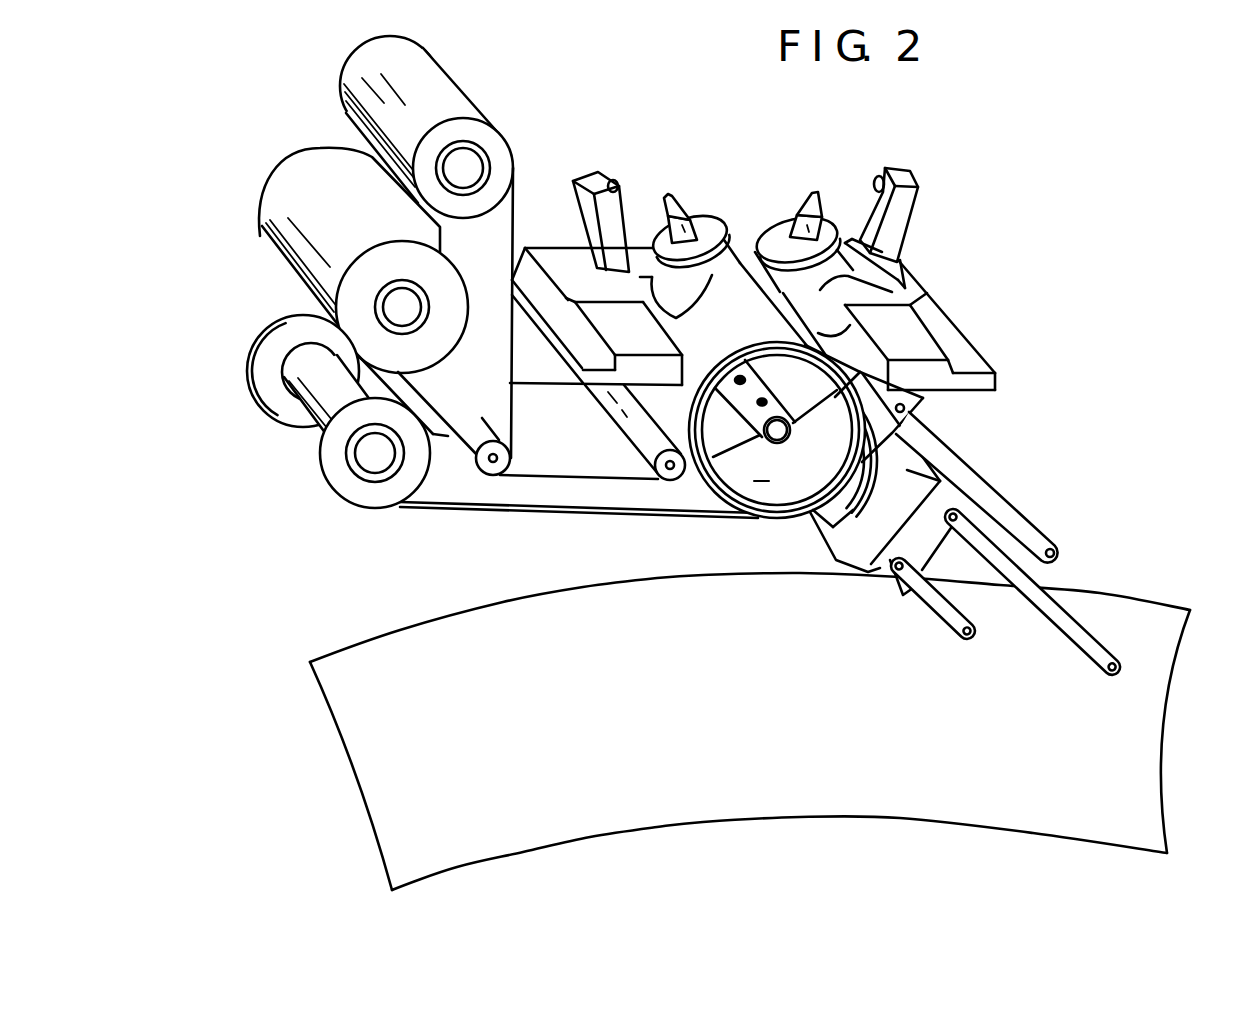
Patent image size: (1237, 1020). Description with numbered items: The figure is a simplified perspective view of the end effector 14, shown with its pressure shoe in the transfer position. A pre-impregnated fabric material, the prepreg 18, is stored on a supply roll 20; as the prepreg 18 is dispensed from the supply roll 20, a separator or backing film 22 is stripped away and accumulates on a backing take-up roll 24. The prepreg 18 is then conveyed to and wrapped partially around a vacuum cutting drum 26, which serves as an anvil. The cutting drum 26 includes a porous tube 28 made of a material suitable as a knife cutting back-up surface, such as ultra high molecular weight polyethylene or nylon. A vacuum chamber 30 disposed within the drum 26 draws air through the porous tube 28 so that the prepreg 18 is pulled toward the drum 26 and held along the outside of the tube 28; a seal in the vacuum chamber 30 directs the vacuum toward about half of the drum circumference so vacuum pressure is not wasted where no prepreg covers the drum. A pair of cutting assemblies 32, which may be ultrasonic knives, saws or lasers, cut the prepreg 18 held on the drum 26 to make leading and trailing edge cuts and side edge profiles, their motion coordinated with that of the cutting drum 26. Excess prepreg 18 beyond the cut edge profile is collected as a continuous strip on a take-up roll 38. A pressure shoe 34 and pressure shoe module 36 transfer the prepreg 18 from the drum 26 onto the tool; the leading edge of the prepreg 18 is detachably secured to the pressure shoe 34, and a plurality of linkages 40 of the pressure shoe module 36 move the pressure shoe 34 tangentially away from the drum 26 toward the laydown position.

The end effector 14 is at (1194, 147).
The prepreg 18 is at (459, 401).
The supply roll 20 is at (282, 162).
The backing film 22 is at (513, 205).
The backing take-up roll 24 is at (500, 137).
The vacuum cutting drum 26 is at (774, 455).
The porous tube 28 is at (835, 392).
The vacuum chamber 30 is at (734, 441).
The cutting assemblies 32 is at (789, 180).
The pressure shoe 34 is at (855, 493).
The pressure shoe module 36 is at (1020, 475).
The take-up roll 38 is at (367, 518).
The linkages 40 is at (975, 632).